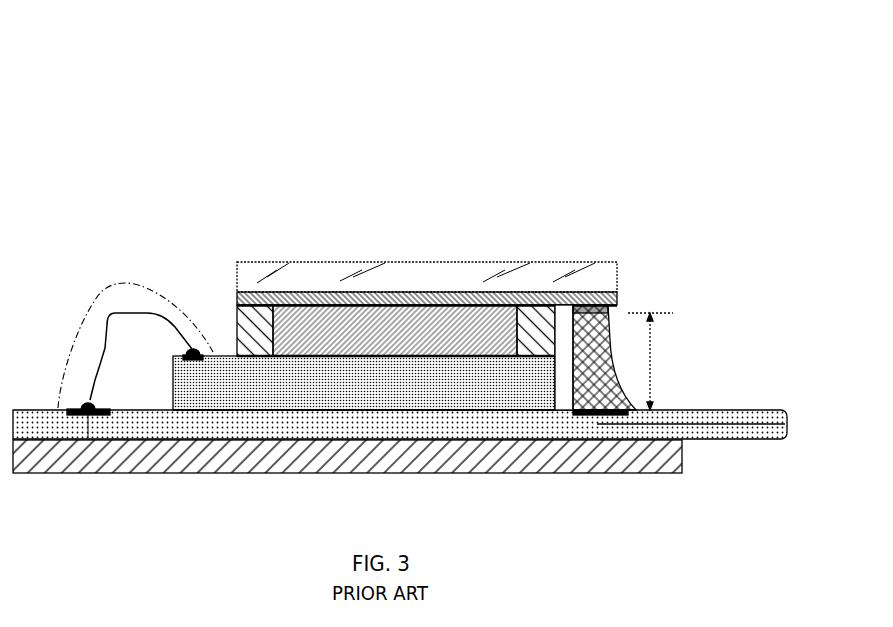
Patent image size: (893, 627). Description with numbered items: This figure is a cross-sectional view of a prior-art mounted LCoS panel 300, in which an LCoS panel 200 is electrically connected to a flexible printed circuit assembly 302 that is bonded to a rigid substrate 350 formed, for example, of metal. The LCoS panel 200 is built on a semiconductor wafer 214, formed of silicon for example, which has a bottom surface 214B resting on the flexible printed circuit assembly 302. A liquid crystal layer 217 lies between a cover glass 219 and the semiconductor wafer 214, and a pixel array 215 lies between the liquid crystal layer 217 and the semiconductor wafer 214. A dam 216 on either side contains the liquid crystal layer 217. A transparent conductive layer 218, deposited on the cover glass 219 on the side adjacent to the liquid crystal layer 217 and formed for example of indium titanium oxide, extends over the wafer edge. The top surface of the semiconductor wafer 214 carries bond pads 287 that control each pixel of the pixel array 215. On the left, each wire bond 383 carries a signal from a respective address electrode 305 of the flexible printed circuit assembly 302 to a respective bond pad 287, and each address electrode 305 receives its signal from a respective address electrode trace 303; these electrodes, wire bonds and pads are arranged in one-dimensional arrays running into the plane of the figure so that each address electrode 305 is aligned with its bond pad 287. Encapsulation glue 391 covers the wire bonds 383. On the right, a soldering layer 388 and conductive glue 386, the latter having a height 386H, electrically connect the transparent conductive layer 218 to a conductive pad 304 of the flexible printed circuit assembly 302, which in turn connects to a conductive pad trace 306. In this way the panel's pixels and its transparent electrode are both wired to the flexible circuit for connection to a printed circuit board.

The mounted LCoS panel 300 is at (170, 140).
The LCoS panel 200 is at (362, 205).
The cover glass 219 is at (440, 288).
The transparent conductive layer 218 is at (237, 300).
The liquid crystal layer 217 is at (455, 339).
The dam 216 is at (237, 345).
The semiconductor wafer 214 is at (412, 392).
The pixel array 215 is at (438, 364).
The bottom surface 214B is at (306, 417).
The bond pads 287 is at (196, 362).
The wire bonds 383 is at (108, 340).
The encapsulation glue 391 is at (90, 307).
The address electrodes 305 is at (97, 408).
The address electrode traces 303 is at (112, 437).
The flexible printed circuit assembly 302 is at (45, 436).
The conductive pad 304 is at (571, 412).
The conductive glue 386 is at (612, 402).
The soldering layer 388 is at (609, 309).
The height 386H is at (654, 361).
The conductive pad trace 306 is at (749, 410).
The rigid substrate 350 is at (419, 465).